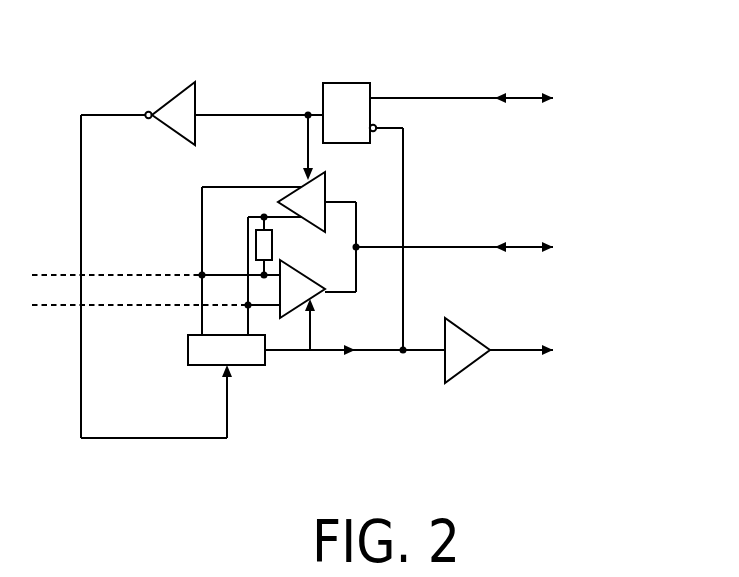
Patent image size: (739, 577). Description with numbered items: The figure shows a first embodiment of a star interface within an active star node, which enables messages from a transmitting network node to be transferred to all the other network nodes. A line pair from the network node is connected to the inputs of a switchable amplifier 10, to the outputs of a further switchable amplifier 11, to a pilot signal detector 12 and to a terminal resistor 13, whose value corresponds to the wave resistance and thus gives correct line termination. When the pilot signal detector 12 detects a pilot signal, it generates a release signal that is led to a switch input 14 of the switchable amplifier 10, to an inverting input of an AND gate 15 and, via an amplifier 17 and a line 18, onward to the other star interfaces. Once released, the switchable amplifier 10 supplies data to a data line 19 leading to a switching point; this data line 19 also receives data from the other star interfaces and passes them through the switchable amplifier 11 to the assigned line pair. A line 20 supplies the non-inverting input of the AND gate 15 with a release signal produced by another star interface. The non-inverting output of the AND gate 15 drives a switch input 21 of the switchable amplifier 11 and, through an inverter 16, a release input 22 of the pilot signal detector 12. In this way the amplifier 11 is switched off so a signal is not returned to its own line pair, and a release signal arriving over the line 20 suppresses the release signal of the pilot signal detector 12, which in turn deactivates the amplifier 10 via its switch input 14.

The switchable amplifier 10 is at (293, 285).
The further switchable amplifier 11 is at (307, 193).
The pilot signal detector 12 is at (202, 347).
The terminal resistor 13 is at (262, 240).
The switch input 14 is at (316, 303).
The AND gate 15 is at (362, 88).
The inverter 16 is at (180, 110).
The amplifier 17 is at (455, 338).
The line 18 is at (513, 352).
The data line 19 is at (455, 246).
The line 20 is at (455, 98).
The switch input 21 is at (302, 176).
The release input 22 is at (226, 369).